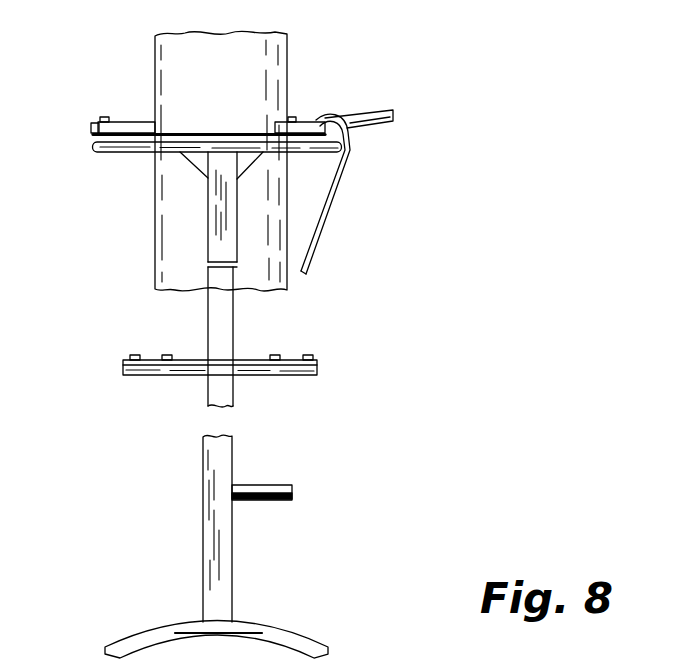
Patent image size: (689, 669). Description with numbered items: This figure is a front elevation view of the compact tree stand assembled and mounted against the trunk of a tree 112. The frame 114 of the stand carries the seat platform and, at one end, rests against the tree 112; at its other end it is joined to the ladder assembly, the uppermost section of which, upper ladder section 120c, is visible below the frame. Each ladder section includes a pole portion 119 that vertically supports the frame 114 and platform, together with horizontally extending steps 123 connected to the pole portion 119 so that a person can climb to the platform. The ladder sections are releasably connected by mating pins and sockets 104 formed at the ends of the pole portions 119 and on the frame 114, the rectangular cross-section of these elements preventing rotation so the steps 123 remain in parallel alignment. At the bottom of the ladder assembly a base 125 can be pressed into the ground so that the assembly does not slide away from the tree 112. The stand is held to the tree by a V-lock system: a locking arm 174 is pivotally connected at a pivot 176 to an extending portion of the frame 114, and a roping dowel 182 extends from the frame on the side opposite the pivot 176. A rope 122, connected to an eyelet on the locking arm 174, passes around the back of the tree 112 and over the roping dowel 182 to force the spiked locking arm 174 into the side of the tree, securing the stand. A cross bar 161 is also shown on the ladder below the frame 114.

The socket 104 is at (208, 226).
The tree 112 is at (287, 66).
The frame 114 is at (96, 149).
The pole portion 119 is at (205, 475).
The upper ladder section 120c is at (207, 330).
The rope 122 is at (330, 204).
The step 123 is at (293, 490).
The base 125 is at (152, 621).
The cross bar 161 is at (318, 362).
The locking arm 174 is at (130, 122).
The pivot 176 is at (100, 119).
The roping dowel 182 is at (393, 112).